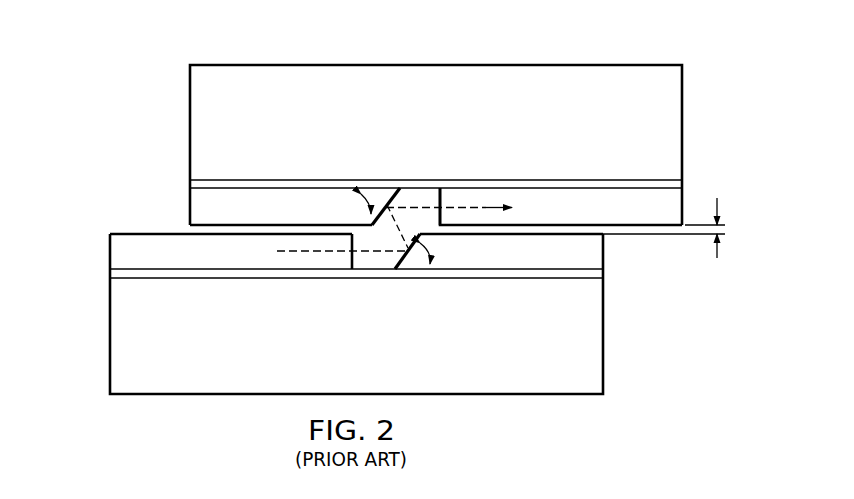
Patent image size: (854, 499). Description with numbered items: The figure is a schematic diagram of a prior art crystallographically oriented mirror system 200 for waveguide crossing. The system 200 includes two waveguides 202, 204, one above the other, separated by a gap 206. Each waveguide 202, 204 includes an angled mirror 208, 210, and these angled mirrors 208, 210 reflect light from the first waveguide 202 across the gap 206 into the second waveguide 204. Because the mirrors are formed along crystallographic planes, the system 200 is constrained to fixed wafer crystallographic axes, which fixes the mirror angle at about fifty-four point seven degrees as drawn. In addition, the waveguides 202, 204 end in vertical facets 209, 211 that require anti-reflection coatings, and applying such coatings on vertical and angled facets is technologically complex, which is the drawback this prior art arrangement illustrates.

The crystallographically oriented mirror system 200 is at (549, 42).
The waveguide 202 is at (117, 249).
The waveguide 204 is at (670, 208).
The gap 206 is at (733, 236).
The angled mirror 208 is at (397, 262).
The vertical facet 209 is at (352, 262).
The angled mirror 210 is at (404, 190).
The vertical facet 211 is at (436, 191).